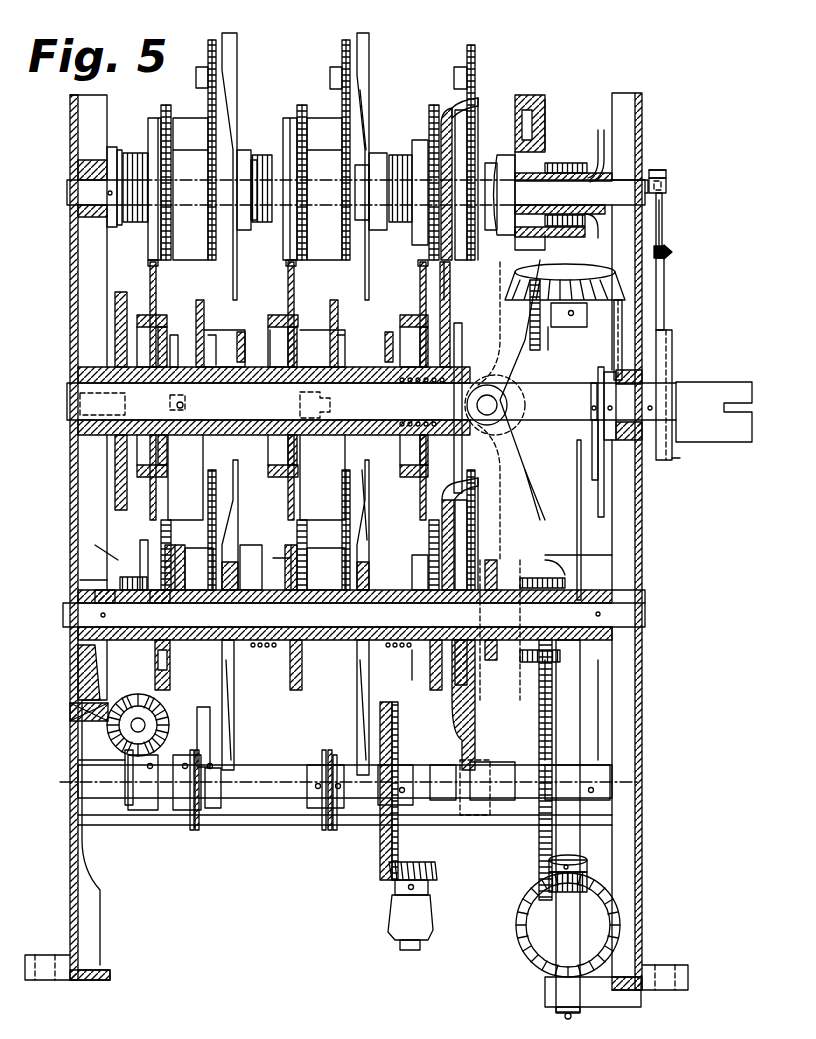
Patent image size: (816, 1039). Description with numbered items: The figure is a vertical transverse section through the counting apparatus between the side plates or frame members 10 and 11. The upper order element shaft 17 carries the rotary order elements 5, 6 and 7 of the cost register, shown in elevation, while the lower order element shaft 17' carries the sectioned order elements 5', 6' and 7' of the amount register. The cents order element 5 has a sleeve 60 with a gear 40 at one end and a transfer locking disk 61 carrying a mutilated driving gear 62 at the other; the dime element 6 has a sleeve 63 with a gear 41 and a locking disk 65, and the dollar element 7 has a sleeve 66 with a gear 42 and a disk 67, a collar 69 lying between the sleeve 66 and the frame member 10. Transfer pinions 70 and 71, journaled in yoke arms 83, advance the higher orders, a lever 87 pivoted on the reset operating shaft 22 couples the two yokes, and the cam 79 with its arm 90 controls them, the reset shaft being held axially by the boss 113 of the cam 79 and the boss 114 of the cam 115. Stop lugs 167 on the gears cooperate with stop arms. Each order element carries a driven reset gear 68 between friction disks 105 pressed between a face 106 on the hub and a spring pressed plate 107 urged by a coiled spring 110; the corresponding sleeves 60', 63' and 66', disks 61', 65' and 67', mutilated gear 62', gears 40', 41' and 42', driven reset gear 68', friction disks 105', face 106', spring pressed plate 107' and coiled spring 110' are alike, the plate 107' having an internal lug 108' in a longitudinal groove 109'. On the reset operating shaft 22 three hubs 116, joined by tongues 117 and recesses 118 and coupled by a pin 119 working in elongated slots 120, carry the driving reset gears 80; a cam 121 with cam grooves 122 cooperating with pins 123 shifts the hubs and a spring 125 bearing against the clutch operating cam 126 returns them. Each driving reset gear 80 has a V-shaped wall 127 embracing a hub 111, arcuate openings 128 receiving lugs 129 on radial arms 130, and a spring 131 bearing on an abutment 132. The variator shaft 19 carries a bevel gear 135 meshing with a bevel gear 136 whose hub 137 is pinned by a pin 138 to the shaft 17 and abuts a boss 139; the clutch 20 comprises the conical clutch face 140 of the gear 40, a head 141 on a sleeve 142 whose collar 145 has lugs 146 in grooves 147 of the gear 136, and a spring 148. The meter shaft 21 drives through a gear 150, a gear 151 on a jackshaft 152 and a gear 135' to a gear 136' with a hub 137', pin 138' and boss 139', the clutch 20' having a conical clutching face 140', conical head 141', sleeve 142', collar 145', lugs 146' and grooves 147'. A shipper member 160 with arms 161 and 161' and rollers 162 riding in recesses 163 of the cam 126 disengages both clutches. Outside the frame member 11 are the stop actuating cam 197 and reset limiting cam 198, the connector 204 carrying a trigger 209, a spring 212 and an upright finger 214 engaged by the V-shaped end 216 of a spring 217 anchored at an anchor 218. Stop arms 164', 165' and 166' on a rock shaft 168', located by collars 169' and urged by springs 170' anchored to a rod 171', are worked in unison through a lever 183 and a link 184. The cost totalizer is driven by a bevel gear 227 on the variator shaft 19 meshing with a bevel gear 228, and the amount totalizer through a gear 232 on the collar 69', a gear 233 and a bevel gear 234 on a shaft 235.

The left frame wall 10 is at (74, 104).
The right frame wall 11 is at (640, 95).
The upper shaft 17 is at (337, 192).
The lower shaft 17' is at (336, 615).
The frame web 69 is at (74, 186).
The plate 67 is at (82, 178).
The hub 66 is at (123, 197).
The spring 110 is at (274, 170).
The sleeve 7 is at (152, 178).
The gear 68 is at (300, 178).
The clutch hub 6 is at (257, 178).
The gear 42 is at (203, 148).
The bracket 167 is at (196, 70).
The plate 107 is at (290, 173).
The plate 65 is at (243, 166).
The hub 63 is at (260, 199).
The gear 41 is at (336, 148).
The plate 62 is at (377, 166).
The arm 61 is at (380, 106).
The hub 5 is at (380, 163).
The sleeve 60 is at (406, 201).
The plate 106 is at (438, 161).
The cap 140 is at (481, 90).
The disc 20 is at (479, 177).
The plate 141 is at (499, 168).
The gear 40 is at (485, 149).
The flange 142 is at (499, 177).
The hub 161 is at (501, 195).
The housing 136 is at (537, 156).
The flange 147 is at (556, 125).
The spring 145 is at (566, 153).
The plate 148 is at (578, 163).
The plate 137 is at (601, 150).
The flange 146 is at (560, 226).
The flange 138 is at (591, 231).
The bracket 139 is at (643, 162).
The pin 218 is at (665, 170).
The cap 217 is at (666, 175).
The block 216 is at (666, 185).
The rod 214 is at (662, 205).
The lever 204 is at (662, 225).
The stop 209 is at (664, 248).
The catch 212 is at (672, 252).
The arm 198 is at (672, 352).
The slot 197 is at (672, 372).
The bevel gear 87 is at (617, 300).
The chain 135 is at (545, 315).
The pivot 126 is at (553, 336).
The eccentric 162 is at (520, 378).
The lever 160 is at (518, 450).
The arm 163 is at (525, 430).
The disc 125 is at (458, 450).
The plate 121 is at (115, 305).
The web 122 is at (70, 368).
The middle shaft 123 is at (67, 388).
The web 116 is at (190, 432).
The roller 120 is at (178, 400).
The pin 119 is at (176, 406).
The roller 117 is at (300, 400).
The key 118 is at (186, 402).
The rod 129 is at (152, 320).
The cap 80 is at (150, 270).
The bracket 128 is at (160, 318).
The plate 71 is at (200, 330).
The plate 70 is at (333, 325).
The cup 83 is at (240, 335).
The block 132 is at (240, 335).
The plate 131 is at (272, 345).
The plate 127 is at (445, 320).
The bracket 130 is at (436, 333).
The spring 111 is at (430, 364).
The plate 105 is at (441, 281).
The shaft end 22 is at (745, 385).
The collar 114 is at (655, 398).
The collar 113 is at (616, 420).
The arrow 115 is at (672, 458).
The plate 79 is at (603, 472).
The plate 90 is at (603, 508).
The gear 42' is at (194, 530).
The gear 41' is at (331, 530).
The gear 40' is at (457, 530).
The plate 65' is at (233, 525).
The plate 62' is at (371, 604).
The arm 61' is at (377, 505).
The gear 68' is at (314, 625).
The plate 66' is at (142, 565).
The spring 110' is at (257, 623).
The block 106' is at (255, 567).
The plate 105' is at (252, 557).
The hub 63' is at (254, 559).
The plate 107' is at (280, 616).
The sleeve 60' is at (407, 555).
The plate 140' is at (454, 534).
The disc 20' is at (479, 545).
The plate 141' is at (499, 589).
The flange 142' is at (507, 615).
The spring 145' is at (542, 567).
The flange 146' is at (345, 581).
The spring 147' is at (345, 651).
The rod 19 is at (577, 541).
The housing 136' is at (613, 558).
The bracket 139' is at (646, 587).
The pin 138' is at (639, 605).
The plate 137' is at (649, 629).
The collar 109' is at (241, 606).
The collar 108' is at (293, 606).
The plate 67' is at (79, 547).
The web 69' is at (73, 567).
The hub 161' is at (469, 705).
The wedge 232 is at (85, 655).
The bevel gear 235 is at (130, 727).
The rod 233 is at (85, 752).
The bar 234 is at (100, 770).
The sleeve 7' is at (198, 735).
The plate 6' is at (243, 705).
The hub 5' is at (405, 685).
The gear 151 is at (380, 855).
The bevel gear 150 is at (392, 883).
The coupling 21 is at (400, 942).
The bottom shaft 184 is at (78, 800).
The rail 171' is at (345, 839).
The block 183 is at (138, 805).
The block 168' is at (175, 800).
The plate 169' is at (249, 804).
The plate 170' is at (263, 804).
The block 166' is at (274, 786).
The plate 165' is at (333, 801).
The sleeve 164' is at (472, 777).
The bearing 152 is at (500, 800).
The chain 135' is at (569, 829).
The pinion 227 is at (590, 878).
The gear 228 is at (618, 920).